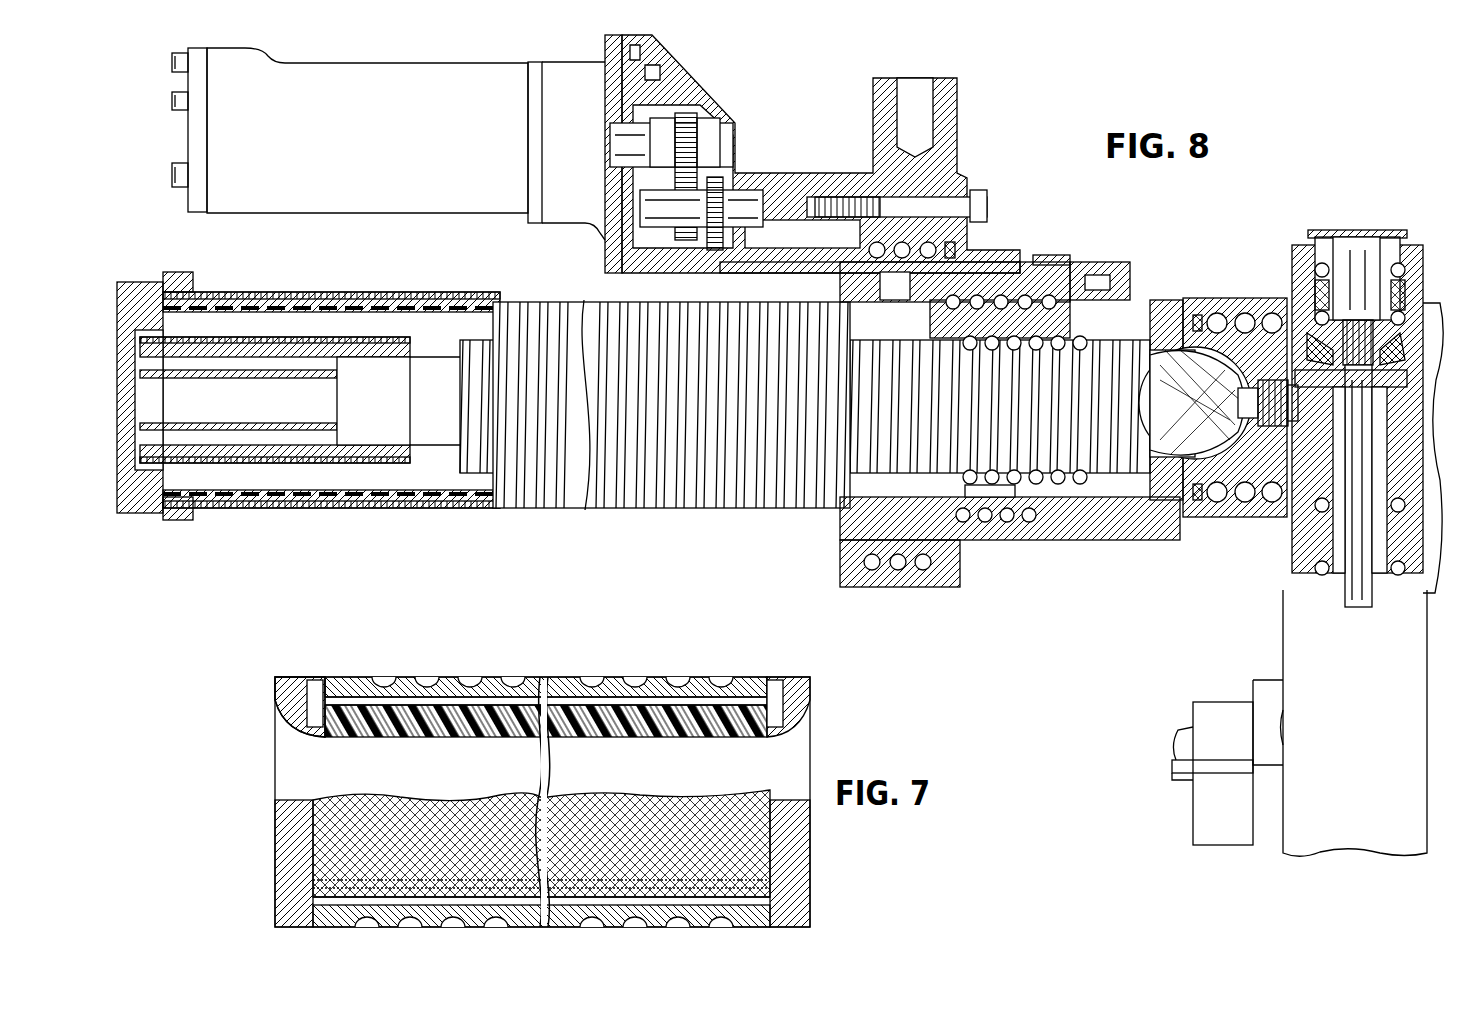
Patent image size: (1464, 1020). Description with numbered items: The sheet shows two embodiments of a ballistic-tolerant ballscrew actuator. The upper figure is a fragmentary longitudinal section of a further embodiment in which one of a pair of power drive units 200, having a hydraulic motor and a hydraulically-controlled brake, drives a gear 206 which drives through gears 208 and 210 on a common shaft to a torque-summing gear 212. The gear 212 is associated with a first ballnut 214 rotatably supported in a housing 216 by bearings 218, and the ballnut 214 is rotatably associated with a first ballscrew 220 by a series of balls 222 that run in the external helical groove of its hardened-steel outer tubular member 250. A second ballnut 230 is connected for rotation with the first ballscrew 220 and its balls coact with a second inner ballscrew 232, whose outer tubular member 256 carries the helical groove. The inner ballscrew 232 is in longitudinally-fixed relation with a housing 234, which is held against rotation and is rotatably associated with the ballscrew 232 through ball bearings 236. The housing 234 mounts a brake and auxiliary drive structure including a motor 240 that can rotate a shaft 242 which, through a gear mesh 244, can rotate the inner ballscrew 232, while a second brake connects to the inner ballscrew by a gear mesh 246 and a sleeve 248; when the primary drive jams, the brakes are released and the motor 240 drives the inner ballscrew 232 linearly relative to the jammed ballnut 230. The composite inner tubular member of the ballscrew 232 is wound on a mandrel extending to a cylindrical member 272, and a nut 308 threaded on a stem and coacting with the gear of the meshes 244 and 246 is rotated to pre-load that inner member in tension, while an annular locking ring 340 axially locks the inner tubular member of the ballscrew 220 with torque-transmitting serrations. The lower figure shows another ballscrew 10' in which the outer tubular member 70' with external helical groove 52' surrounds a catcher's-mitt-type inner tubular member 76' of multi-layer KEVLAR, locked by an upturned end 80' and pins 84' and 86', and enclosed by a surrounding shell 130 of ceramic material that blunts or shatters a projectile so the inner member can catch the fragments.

In FIG. 8, the power drive unit 200 is at (405, 78).
In FIG. 8, the gear 206 is at (700, 118).
In FIG. 8, the gear 208 is at (685, 242).
In FIG. 8, the gear 210 is at (717, 215).
In FIG. 8, the gear 212 is at (710, 273).
In FIG. 8, the first ballnut 214 is at (978, 288).
In FIG. 8, the housing 216 is at (950, 178).
In FIG. 8, the bearings 218 is at (962, 270).
In FIG. 8, the first ballscrew 220 is at (600, 500).
In FIG. 8, the balls 222 is at (1060, 278).
In FIG. 8, the second ballnut 230 is at (1075, 550).
In FIG. 8, the second inner ballscrew 232 is at (421, 479).
In FIG. 8, the housing 234 is at (1425, 240).
In FIG. 8, the ball bearings 236 is at (1243, 315).
In FIG. 8, the motor 240 is at (1375, 737).
In FIG. 8, the shaft 242 is at (1345, 600).
In FIG. 8, the gear mesh 244 is at (1297, 303).
In FIG. 8, the gear mesh 246 is at (1268, 462).
In FIG. 8, the sleeve 248 is at (1393, 592).
In FIG. 8, the outer tubular member 250 is at (700, 490).
In FIG. 8, the outer tubular member 256 is at (273, 340).
In FIG. 8, the cylindrical member 272 is at (385, 355).
In FIG. 8, the nut 308 is at (1205, 401).
In FIG. 8, the annular locking ring 340 is at (148, 515).
In FIG. 7, the outer tubular member 70' is at (542, 782).
In FIG. 7, the external helical groove 52' is at (546, 674).
In FIG. 7, the inner tubular member 76' is at (546, 743).
In FIG. 7, the upturned end 80' is at (529, 682).
In FIG. 7, the pin 84' is at (332, 673).
In FIG. 7, the pin 86' is at (795, 682).
In FIG. 7, the shell 130 is at (680, 685).
In FIG. 7, the ballscrew 10' is at (541, 823).